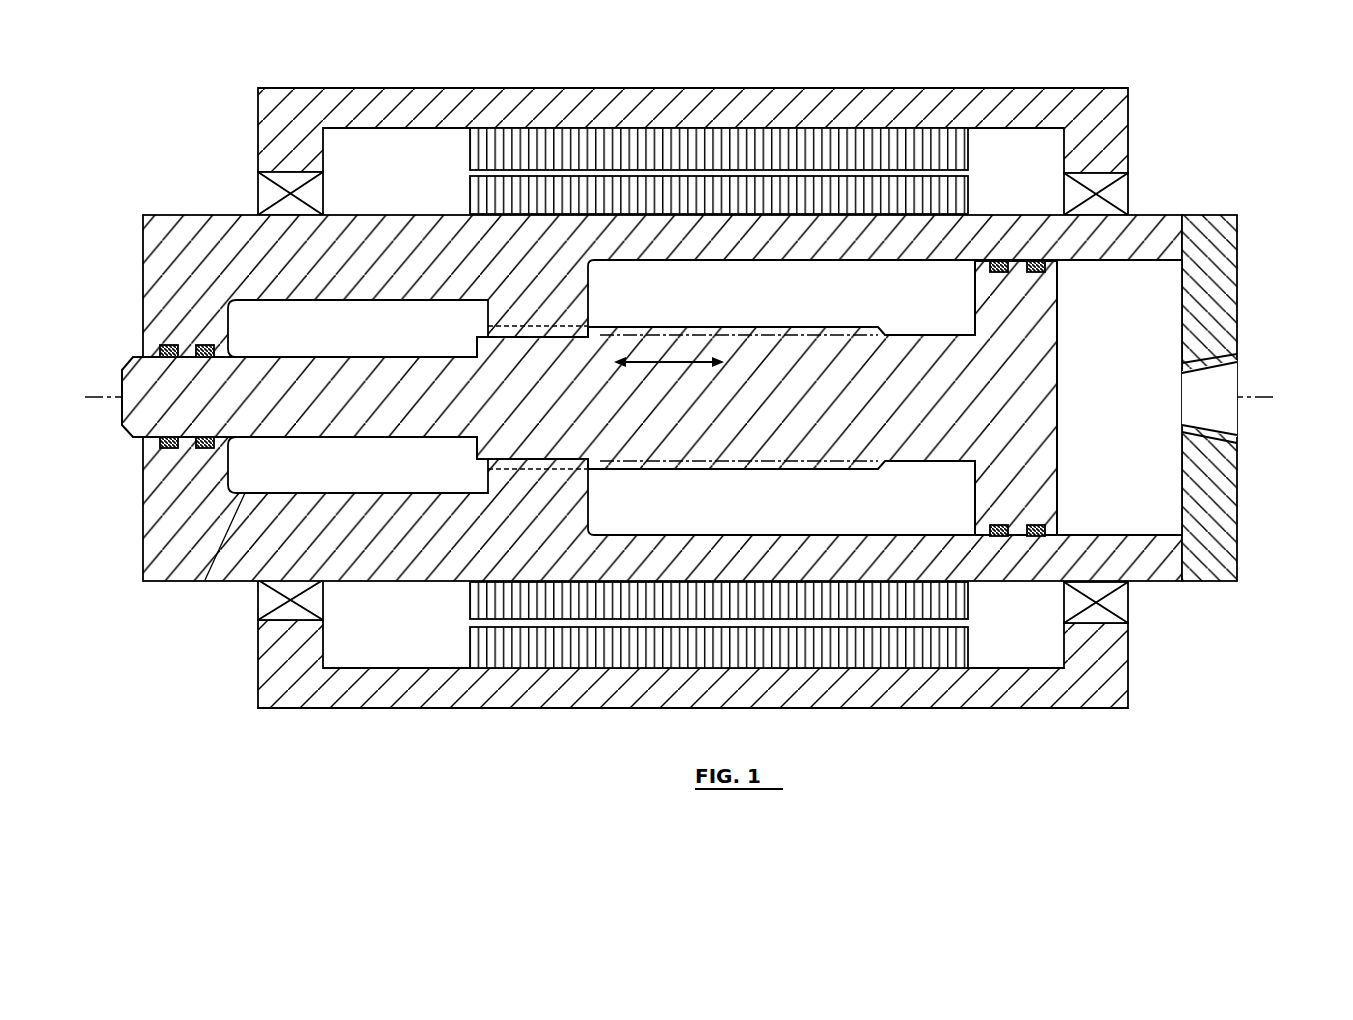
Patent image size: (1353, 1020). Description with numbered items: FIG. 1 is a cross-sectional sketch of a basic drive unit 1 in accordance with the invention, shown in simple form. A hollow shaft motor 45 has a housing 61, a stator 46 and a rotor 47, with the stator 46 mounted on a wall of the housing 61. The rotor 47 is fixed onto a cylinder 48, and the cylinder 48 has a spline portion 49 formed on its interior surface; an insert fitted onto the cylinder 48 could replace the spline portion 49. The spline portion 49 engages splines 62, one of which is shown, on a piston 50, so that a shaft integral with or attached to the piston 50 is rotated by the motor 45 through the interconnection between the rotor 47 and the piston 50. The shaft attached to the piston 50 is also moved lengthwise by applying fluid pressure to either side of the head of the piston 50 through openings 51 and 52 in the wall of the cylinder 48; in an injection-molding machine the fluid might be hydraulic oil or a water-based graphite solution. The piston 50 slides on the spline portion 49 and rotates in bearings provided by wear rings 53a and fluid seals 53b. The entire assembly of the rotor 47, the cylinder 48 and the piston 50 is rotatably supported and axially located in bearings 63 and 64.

The piston 1 is at (589, 398).
The hollow shaft motor 45 is at (727, 366).
The stator 46 is at (782, 142).
The rotor 47 is at (958, 195).
The cylinder 48 is at (1165, 223).
The spline portion 49 is at (575, 495).
The piston 50 is at (836, 384).
The opening 51 is at (208, 584).
The opening 52 is at (1216, 380).
The wear ring 53a is at (167, 460).
The fluid seal 53b is at (198, 447).
The housing 61 is at (1073, 103).
The spline 62 is at (672, 327).
The bearing 63 is at (1117, 190).
The bearing 64 is at (265, 193).